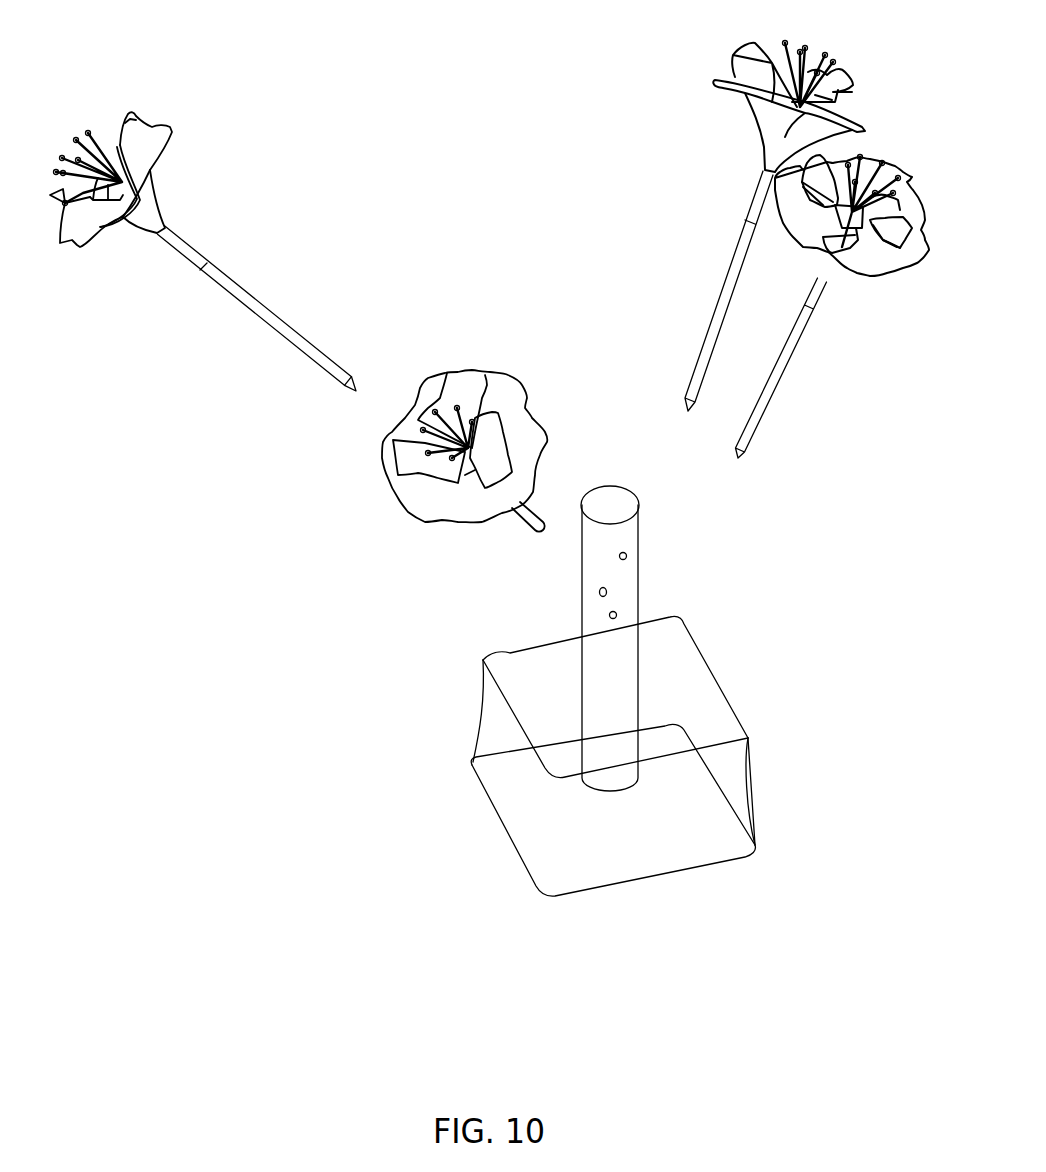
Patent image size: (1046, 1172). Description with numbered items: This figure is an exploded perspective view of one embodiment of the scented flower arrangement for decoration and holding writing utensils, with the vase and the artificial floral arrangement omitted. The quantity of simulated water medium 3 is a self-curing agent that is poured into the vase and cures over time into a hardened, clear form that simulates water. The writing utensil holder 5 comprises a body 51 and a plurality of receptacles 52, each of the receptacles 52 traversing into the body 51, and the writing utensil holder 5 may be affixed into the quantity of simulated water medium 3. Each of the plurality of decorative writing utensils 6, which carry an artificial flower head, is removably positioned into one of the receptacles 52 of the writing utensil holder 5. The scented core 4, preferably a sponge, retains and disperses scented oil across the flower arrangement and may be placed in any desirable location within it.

The quantity of simulated water medium 3 is at (752, 778).
The scented core 4 is at (608, 485).
The writing utensil holder 5 is at (534, 572).
The body 51 is at (638, 568).
The plurality of receptacles 52 is at (620, 556).
The plurality of decorative writing utensils 6 is at (713, 77).